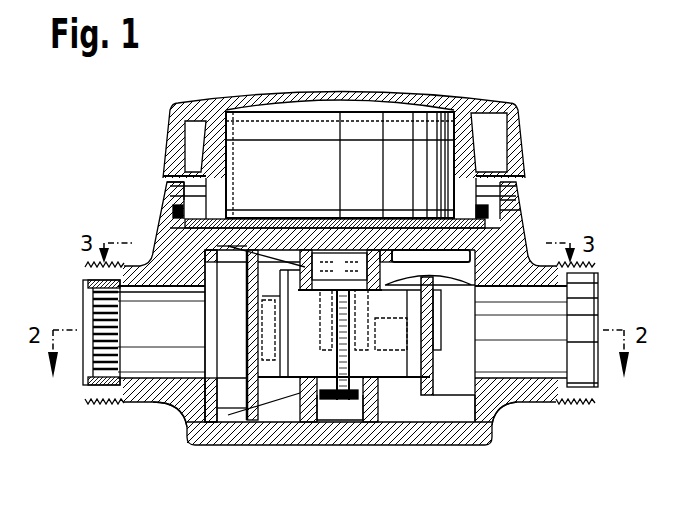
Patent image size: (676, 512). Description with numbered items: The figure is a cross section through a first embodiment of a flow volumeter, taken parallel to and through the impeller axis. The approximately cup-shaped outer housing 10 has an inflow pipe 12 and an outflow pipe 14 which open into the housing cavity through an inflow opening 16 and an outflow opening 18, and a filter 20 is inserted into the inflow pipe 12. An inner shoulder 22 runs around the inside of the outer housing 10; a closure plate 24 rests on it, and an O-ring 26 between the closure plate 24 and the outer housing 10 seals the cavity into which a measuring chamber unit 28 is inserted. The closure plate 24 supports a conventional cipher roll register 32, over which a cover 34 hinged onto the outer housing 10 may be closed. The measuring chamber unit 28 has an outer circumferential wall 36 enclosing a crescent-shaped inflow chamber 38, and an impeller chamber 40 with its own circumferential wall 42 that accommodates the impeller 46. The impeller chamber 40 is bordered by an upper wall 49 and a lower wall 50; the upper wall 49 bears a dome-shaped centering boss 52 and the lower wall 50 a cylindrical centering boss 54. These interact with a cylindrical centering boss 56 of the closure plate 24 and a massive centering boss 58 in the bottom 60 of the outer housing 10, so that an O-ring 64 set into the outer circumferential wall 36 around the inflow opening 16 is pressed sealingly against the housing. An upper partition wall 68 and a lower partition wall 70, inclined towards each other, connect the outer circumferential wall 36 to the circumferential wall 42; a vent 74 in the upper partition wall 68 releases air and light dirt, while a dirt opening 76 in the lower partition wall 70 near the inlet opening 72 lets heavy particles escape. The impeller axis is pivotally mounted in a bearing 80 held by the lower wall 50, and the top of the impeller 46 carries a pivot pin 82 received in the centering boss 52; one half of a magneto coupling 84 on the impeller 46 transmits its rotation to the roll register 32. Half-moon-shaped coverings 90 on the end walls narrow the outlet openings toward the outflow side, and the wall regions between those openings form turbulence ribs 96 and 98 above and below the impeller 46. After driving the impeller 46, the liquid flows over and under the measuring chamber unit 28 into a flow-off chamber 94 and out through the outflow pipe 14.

The outer housing 10 is at (505, 413).
The inflow pipe 12 is at (105, 398).
The outflow pipe 14 is at (557, 403).
The inflow opening 16 is at (180, 265).
The outflow opening 18 is at (532, 264).
The filter 20 is at (86, 300).
The inner shoulder 22 is at (178, 242).
The closure plate 24 is at (518, 232).
The O-ring 26 is at (524, 262).
The measuring chamber unit 28 is at (458, 388).
The cipher roll register 32 is at (402, 126).
The cover 34 is at (297, 97).
The outer circumferential wall 36 is at (227, 392).
The inflow chamber 38 is at (214, 420).
The impeller chamber 40 is at (412, 395).
The circumferential wall 42 is at (246, 400).
The impeller 46 is at (425, 312).
The upper wall 49 is at (280, 250).
The lower wall 50 is at (293, 395).
The centering boss 52 is at (366, 252).
The cylindrical centering boss 54 is at (378, 395).
The cylindrical centering boss 56 is at (400, 262).
The massive centering boss 58 is at (323, 422).
The bottom 60 is at (428, 398).
The O-ring 64 is at (187, 392).
The upper partition wall 68 is at (254, 248).
The lower partition wall 70 is at (259, 400).
The inlet opening 72 is at (135, 402).
The vent 74 is at (236, 246).
The dirt opening 76 is at (243, 398).
The bearing 80 is at (344, 405).
The pivot pin 82 is at (345, 250).
The magneto coupling half 84 is at (312, 250).
The half-moon-shaped coverings 90 is at (400, 285).
The flow-off chamber 94 is at (492, 418).
The turbulence ribs 96 is at (270, 296).
The turbulence ribs 98 is at (270, 365).